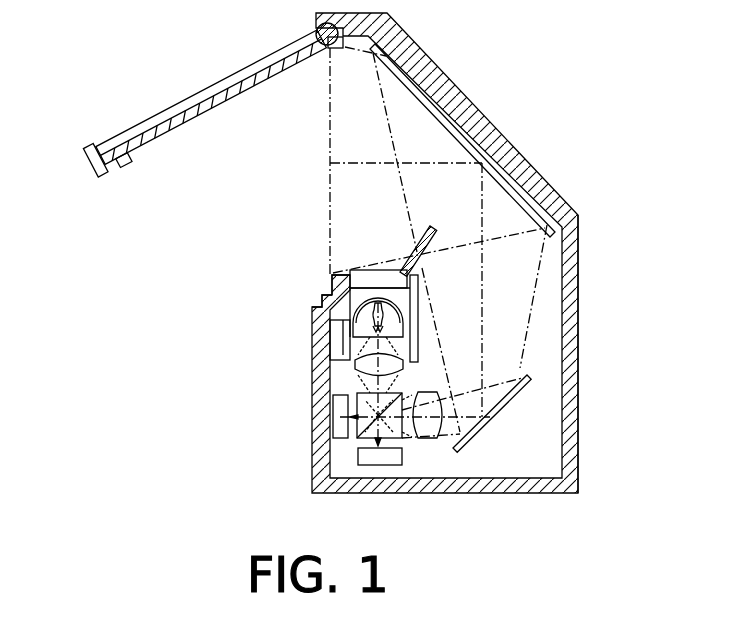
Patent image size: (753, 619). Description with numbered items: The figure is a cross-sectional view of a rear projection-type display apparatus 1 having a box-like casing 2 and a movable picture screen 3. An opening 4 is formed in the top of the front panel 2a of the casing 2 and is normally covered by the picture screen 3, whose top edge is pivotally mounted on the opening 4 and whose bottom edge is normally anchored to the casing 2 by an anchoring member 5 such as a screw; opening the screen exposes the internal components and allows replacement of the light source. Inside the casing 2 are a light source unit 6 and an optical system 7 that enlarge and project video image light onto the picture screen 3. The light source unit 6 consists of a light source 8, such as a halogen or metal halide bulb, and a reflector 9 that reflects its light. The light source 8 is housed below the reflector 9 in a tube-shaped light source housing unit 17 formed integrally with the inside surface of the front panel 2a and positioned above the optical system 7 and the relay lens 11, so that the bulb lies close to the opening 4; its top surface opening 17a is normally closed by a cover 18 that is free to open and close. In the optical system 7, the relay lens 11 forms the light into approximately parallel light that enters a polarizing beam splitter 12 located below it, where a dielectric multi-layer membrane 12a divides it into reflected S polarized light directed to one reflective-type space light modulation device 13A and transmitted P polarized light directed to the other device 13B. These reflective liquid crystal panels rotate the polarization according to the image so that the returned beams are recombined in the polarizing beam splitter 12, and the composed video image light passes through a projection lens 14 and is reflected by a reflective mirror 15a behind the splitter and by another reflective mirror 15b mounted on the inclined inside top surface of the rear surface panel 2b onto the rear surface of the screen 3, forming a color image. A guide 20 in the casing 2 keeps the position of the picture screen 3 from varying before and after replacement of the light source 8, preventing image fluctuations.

The rear projection-type display apparatus 1 is at (656, 165).
The casing 2 is at (513, 157).
The front panel 2a is at (313, 308).
The rear surface panel 2b is at (578, 277).
The picture screen 3 is at (195, 108).
The opening 4 is at (330, 130).
The anchoring member 5 is at (86, 150).
The light source unit 6 is at (488, 255).
The optical system 7 is at (212, 302).
The light source 8 is at (398, 335).
The reflector 9 is at (383, 311).
The relay lens 11 is at (343, 364).
The polarizing beam splitter 12 is at (357, 365).
The dielectric multi-layer membrane 12a is at (458, 448).
The reflective-type space light modulation device 13A is at (338, 410).
The reflective-type space light modulation device 13B is at (358, 450).
The projection lens 14 is at (404, 398).
The reflective mirror 15a is at (512, 403).
The reflective mirror 15b is at (462, 133).
The light source housing unit 17 is at (420, 272).
The top surface opening 17a is at (372, 270).
The cover 18 is at (412, 250).
The guide 20 is at (322, 287).